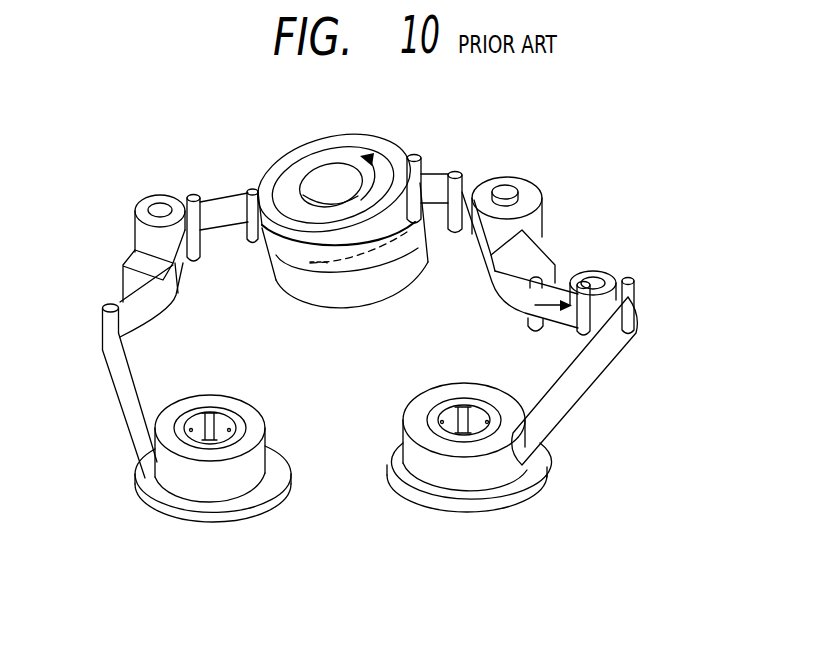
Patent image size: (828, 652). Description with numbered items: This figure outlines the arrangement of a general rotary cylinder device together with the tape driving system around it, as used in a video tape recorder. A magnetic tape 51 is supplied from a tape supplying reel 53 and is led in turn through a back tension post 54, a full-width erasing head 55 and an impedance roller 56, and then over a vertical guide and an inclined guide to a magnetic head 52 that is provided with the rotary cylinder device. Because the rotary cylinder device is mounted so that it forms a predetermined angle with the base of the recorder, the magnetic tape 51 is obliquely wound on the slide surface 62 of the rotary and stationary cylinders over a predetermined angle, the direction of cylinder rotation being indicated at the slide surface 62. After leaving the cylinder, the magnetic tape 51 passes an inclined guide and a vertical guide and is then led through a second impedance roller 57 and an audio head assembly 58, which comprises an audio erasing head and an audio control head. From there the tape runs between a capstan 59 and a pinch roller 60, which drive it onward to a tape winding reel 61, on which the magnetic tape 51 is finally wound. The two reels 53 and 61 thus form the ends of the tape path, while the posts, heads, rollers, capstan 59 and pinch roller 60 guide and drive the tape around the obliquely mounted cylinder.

The magnetic tape 51 is at (405, 248).
The magnetic head 52 is at (316, 263).
The tape supplying reel 53 is at (208, 397).
The back tension post 54 is at (110, 306).
The full-width erasing head 55 is at (132, 280).
The impedance roller 56 is at (150, 197).
The impedance roller 57 is at (520, 190).
The audio head assembly 58 is at (556, 224).
The capstan 59 is at (582, 285).
The pinch roller 60 is at (613, 273).
The tape winding reel 61 is at (503, 400).
The slide surface 62 is at (400, 210).